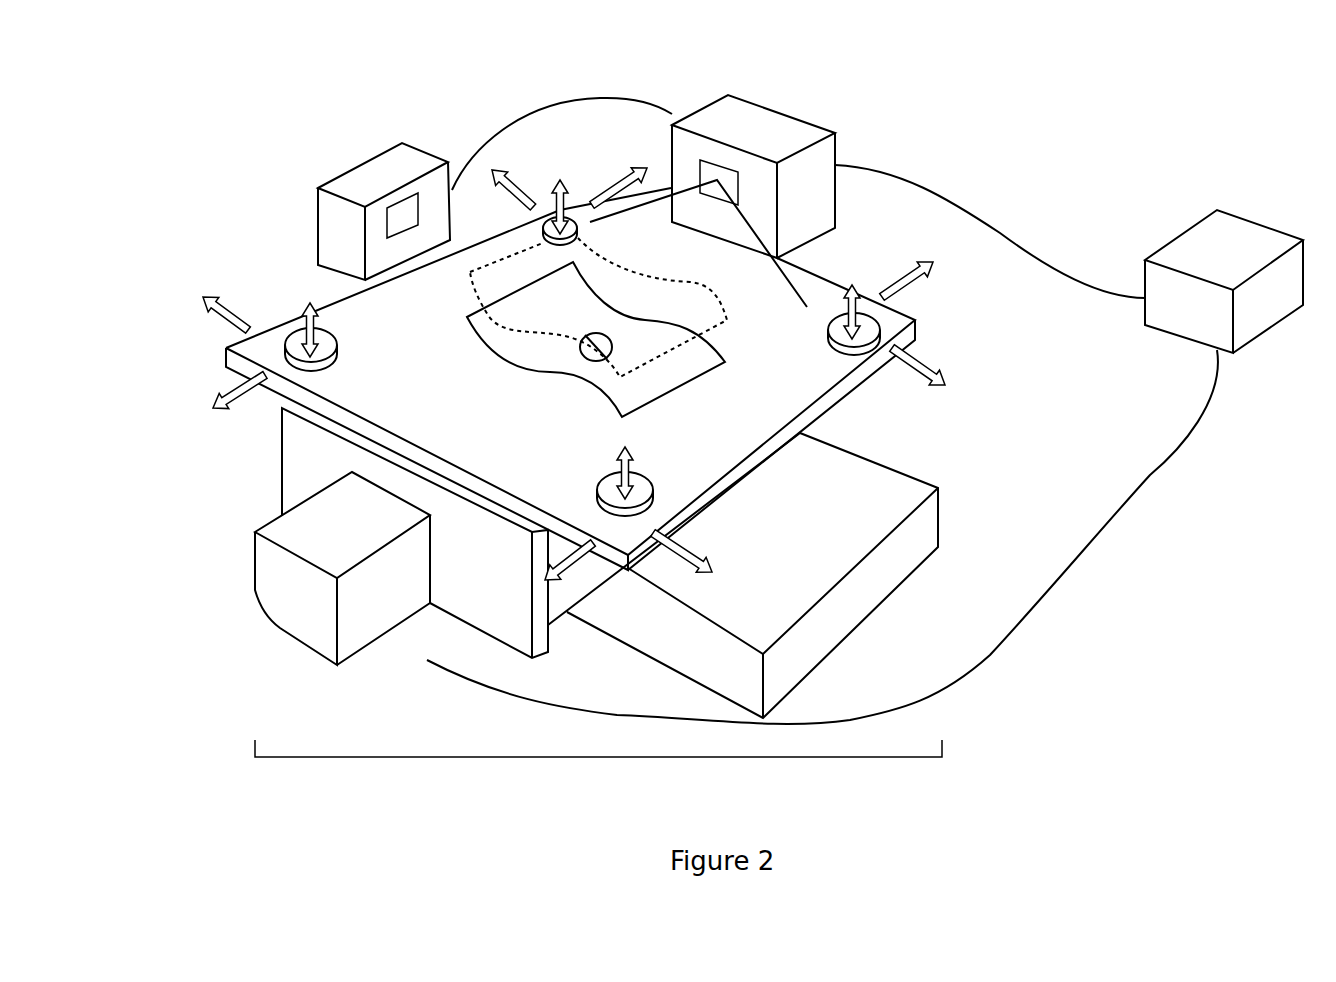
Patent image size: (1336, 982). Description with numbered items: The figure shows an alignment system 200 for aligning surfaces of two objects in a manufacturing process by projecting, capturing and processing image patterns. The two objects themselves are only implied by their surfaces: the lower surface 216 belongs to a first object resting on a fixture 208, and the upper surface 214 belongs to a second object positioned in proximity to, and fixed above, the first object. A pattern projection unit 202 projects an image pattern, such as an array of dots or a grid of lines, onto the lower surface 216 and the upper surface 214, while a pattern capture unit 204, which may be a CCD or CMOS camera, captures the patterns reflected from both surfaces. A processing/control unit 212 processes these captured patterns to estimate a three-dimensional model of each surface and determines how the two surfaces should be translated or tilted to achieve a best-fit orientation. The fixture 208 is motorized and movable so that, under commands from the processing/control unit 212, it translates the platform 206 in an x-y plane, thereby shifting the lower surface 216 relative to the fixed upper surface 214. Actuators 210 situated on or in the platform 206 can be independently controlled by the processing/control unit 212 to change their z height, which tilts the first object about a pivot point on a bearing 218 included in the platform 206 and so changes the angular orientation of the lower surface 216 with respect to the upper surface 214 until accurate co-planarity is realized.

The alignment system 200 is at (150, 112).
The pattern projection unit 202 is at (783, 113).
The pattern capture unit 204 is at (400, 144).
The platform 206 is at (833, 401).
The fixture 208 is at (690, 758).
The actuator 210 is at (927, 316).
The processing/control unit 212 is at (1187, 227).
The upper surface 214 is at (678, 298).
The lower surface 216 is at (653, 392).
The bearing 218 is at (578, 353).